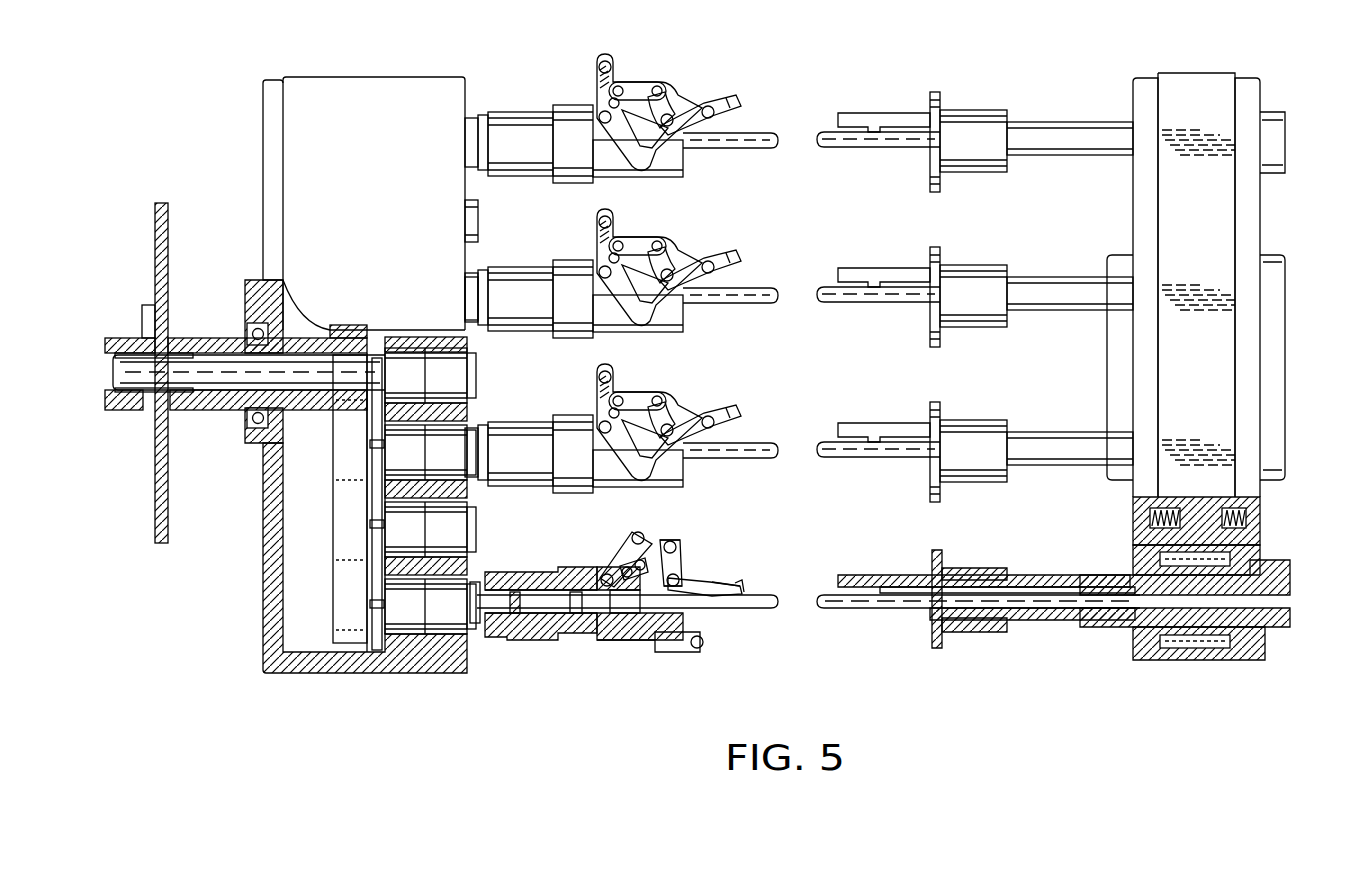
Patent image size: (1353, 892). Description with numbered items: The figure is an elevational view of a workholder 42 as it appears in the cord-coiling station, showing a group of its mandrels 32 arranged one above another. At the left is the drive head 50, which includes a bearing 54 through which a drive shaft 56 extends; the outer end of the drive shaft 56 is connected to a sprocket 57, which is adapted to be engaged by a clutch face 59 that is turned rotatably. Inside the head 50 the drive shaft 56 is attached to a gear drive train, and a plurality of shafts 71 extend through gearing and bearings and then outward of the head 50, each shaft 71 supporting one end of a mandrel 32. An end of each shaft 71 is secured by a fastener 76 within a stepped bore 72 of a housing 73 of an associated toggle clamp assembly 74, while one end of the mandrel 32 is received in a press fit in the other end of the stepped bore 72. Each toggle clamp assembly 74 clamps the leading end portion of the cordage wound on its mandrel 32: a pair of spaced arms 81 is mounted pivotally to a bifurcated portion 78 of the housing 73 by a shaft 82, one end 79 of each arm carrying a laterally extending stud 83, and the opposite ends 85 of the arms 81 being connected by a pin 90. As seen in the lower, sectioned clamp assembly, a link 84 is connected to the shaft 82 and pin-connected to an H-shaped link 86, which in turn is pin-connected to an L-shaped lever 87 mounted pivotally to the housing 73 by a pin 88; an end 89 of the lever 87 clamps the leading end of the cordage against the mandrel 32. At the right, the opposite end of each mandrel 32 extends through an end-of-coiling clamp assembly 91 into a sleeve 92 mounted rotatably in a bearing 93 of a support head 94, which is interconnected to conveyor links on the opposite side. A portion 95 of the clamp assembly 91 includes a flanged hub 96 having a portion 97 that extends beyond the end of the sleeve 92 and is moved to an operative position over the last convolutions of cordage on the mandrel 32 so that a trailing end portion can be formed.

The mandrel 32 is at (752, 608).
The workholder 42 is at (524, 55).
The drive head 50 is at (308, 77).
The bearing 54 is at (243, 325).
The drive shaft 56 is at (205, 368).
The sprocket 57 is at (168, 235).
The clutch face 59 is at (128, 345).
The shaft 71 is at (372, 448).
The stepped bore 72 is at (512, 597).
The housing 73 is at (563, 575).
The toggle clamp assembly 74 is at (688, 68).
The fastener 76 is at (512, 636).
The bifurcated portion 78 is at (592, 575).
The end of arm 79 is at (668, 650).
The arm 81 is at (660, 652).
The shaft 82 is at (622, 625).
The stud 83 is at (704, 645).
The link 84 is at (601, 575).
The opposite end of arm 85 is at (597, 80).
The H-shaped link 86 is at (664, 556).
The L-shaped lever 87 is at (714, 582).
The pin 88 is at (676, 578).
The end of lever 89 is at (740, 590).
The pin 90 is at (612, 61).
The end-of-coiling clamp assembly 91 is at (900, 422).
The sleeve 92 is at (1292, 590).
The bearing 93 is at (1250, 551).
The support head 94 is at (1262, 212).
The portion of clamp assembly 95 is at (998, 112).
The flanged hub 96 is at (942, 97).
The portion of flanged hub 97 is at (900, 113).